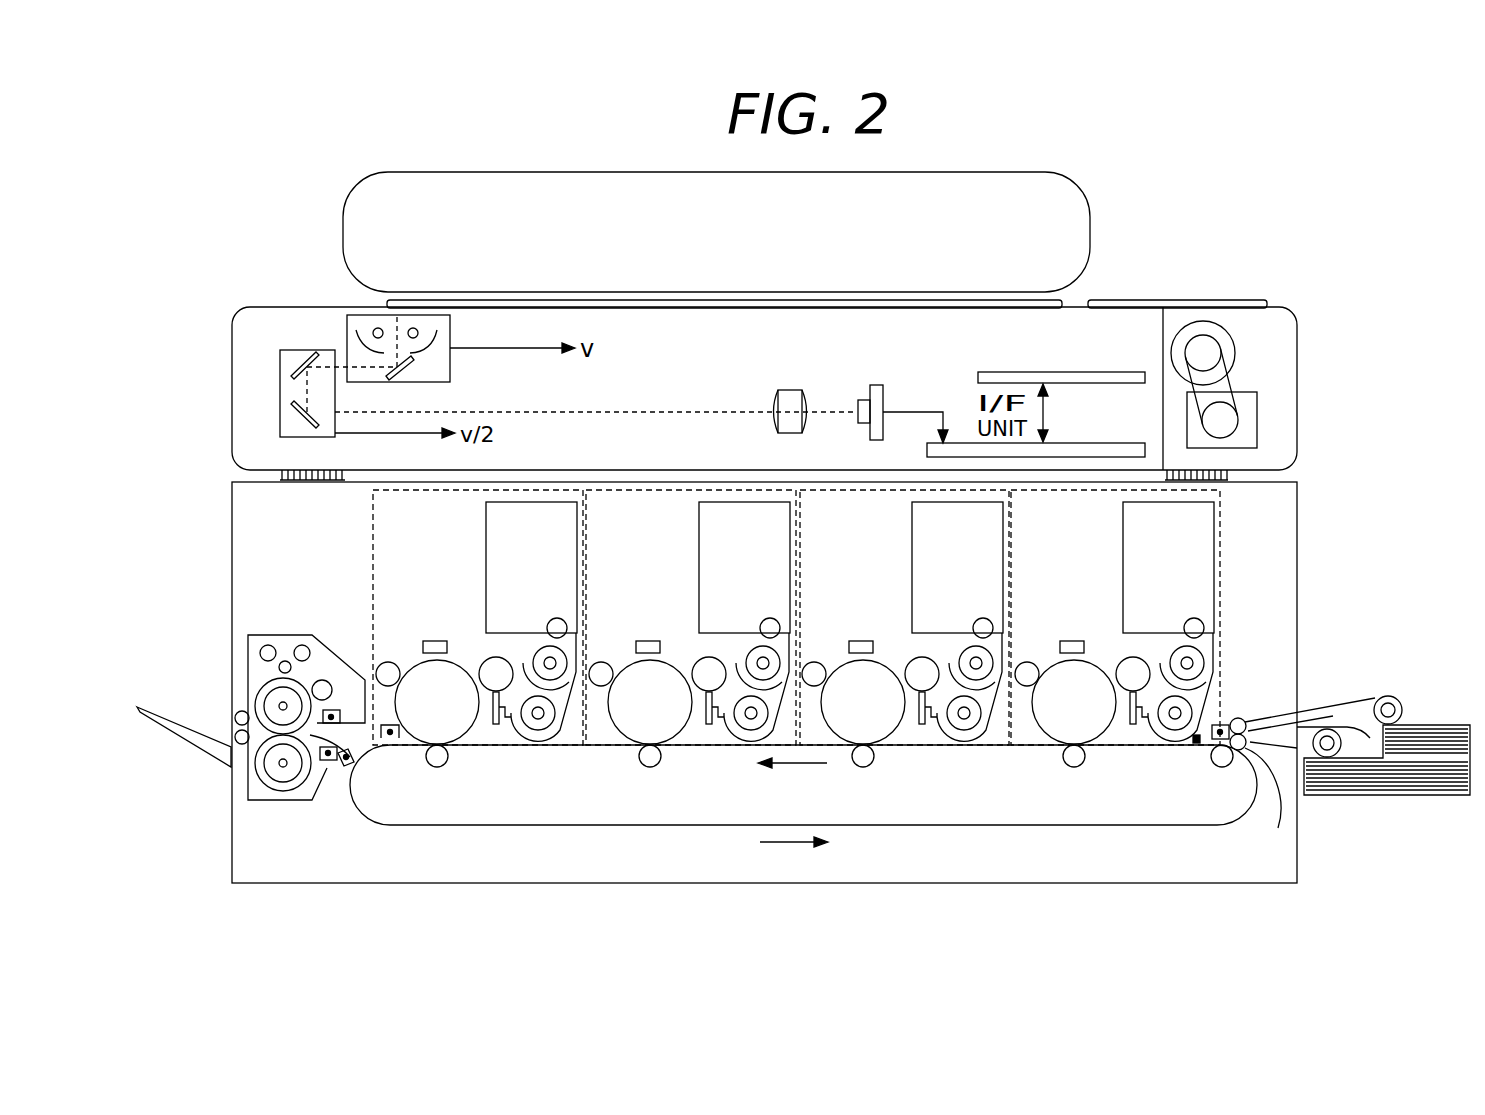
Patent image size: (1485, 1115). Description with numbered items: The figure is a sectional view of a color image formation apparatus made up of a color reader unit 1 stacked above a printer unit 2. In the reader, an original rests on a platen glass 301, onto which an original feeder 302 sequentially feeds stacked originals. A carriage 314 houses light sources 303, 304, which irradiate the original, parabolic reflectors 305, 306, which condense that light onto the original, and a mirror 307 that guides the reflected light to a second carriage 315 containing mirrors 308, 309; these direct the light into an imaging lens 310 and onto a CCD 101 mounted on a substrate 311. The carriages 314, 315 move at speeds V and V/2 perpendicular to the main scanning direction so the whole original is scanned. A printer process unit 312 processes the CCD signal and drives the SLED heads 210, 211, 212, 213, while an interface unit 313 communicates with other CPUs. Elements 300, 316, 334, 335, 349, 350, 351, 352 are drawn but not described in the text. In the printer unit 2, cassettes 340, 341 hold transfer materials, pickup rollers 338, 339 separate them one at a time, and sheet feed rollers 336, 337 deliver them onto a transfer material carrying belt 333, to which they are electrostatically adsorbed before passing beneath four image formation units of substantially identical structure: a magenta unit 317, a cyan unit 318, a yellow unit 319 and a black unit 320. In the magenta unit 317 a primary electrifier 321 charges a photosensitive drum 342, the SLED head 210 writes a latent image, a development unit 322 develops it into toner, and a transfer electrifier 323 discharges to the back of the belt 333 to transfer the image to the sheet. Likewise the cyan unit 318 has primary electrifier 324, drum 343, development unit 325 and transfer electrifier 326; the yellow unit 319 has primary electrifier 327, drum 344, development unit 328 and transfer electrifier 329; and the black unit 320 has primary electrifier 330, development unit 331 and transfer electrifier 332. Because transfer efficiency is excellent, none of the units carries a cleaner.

The color reader unit 1 is at (1260, 273).
The printer unit 2 is at (1318, 516).
The CCD 101 is at (862, 398).
The SLED head 210 is at (1071, 640).
The SLED head 211 is at (860, 640).
The SLED head 212 is at (647, 640).
The SLED head 213 is at (434, 640).
The reference plate 300 is at (1195, 300).
The platen glass 301 is at (518, 300).
The original feeder 302 is at (1088, 207).
The light source 303 is at (415, 328).
The light source 304 is at (378, 328).
The parabolic reflector 305 is at (449, 335).
The parabolic reflector 306 is at (358, 350).
The mirror 307 is at (414, 374).
The mirror 308 is at (280, 354).
The mirror 309 is at (280, 430).
The imaging lens 310 is at (793, 390).
The substrate 311 is at (885, 386).
The printer process unit 312 is at (1122, 443).
The interface unit 313 is at (1122, 372).
The carriage 314 is at (345, 318).
The carriage 315 is at (280, 393).
The drive motor 316 is at (1232, 352).
The magenta image formation unit 317 is at (1222, 538).
The cyan image formation unit 318 is at (843, 490).
The yellow image formation unit 319 is at (642, 490).
The black image formation unit 320 is at (538, 490).
The primary electrifier 321 is at (1027, 662).
The development unit 322 is at (1123, 547).
The transfer electrifier 323 is at (1082, 767).
The primary electrifier 324 is at (814, 662).
The development unit 325 is at (912, 547).
The transfer electrifier 326 is at (871, 767).
The primary electrifier 327 is at (601, 662).
The development unit 328 is at (699, 547).
The transfer electrifier 329 is at (658, 767).
The primary electrifier 330 is at (388, 662).
The development unit 331 is at (486, 547).
The transfer electrifier 332 is at (445, 767).
The transfer material carrying belt 333 is at (555, 826).
The fixing unit 334 is at (283, 636).
The discharge tray 335 is at (190, 727).
The sheet feed roller 336 is at (1255, 733).
The sheet feed roller 337 is at (1255, 792).
The pickup roller 338 is at (1327, 760).
The pickup roller 339 is at (1393, 696).
The cassette 340 is at (1447, 797).
The cassette 341 is at (1448, 725).
The photosensitive drum 342 is at (1124, 657).
The photosensitive drum 343 is at (913, 657).
The photosensitive drum 344 is at (700, 657).
The sensor 349 is at (389, 740).
The sensor 350 is at (340, 768).
The sensor 351 is at (323, 762).
The sensor 352 is at (338, 708).